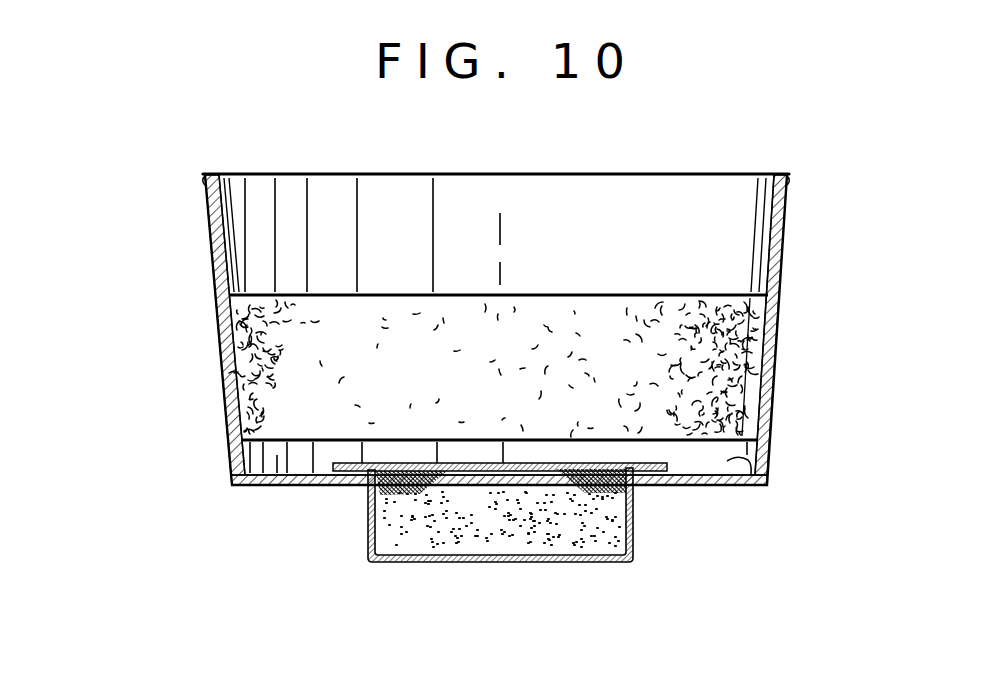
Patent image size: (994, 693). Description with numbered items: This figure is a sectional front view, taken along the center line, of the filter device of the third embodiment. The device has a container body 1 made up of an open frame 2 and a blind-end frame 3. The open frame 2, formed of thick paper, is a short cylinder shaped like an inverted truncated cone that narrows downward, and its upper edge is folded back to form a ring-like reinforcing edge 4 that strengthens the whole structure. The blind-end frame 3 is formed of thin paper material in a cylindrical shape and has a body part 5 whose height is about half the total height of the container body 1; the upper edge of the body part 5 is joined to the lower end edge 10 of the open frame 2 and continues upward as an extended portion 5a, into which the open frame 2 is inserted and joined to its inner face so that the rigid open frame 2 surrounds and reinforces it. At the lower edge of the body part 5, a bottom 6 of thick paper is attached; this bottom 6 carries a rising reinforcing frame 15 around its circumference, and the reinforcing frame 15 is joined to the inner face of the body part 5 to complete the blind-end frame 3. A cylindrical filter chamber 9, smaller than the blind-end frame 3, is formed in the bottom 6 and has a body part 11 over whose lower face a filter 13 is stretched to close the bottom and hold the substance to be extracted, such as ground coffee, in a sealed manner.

The container body 1 is at (198, 286).
The open frame 2 is at (297, 193).
The blind-end frame 3 is at (795, 414).
The reinforcing edge 4 is at (790, 176).
The body part 5 is at (758, 372).
The extended portion 5a is at (787, 248).
The bottom 6 is at (691, 487).
The filter chamber 9 is at (531, 574).
The lower end edge 10 is at (293, 302).
The body part of the filter chamber 11 is at (370, 517).
The filter 13 is at (441, 562).
The reinforcing frame 15 is at (273, 487).